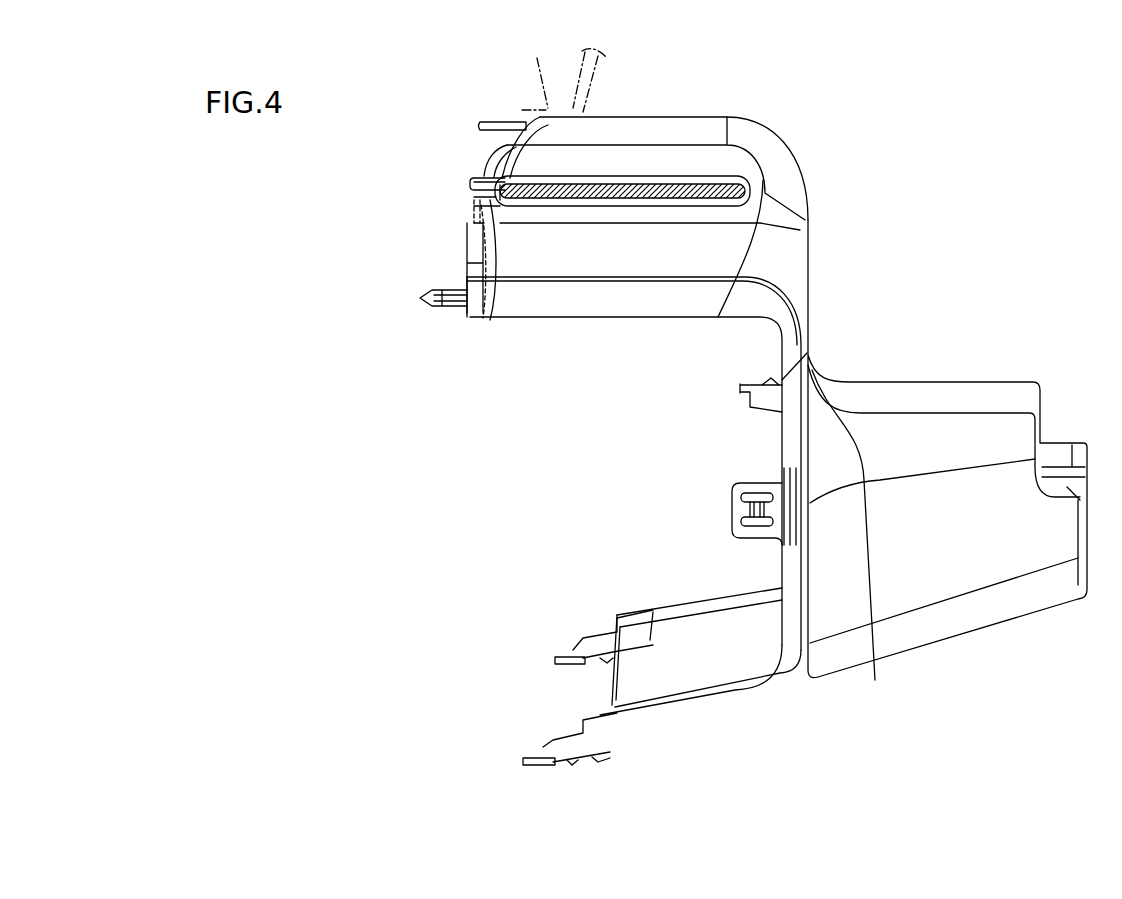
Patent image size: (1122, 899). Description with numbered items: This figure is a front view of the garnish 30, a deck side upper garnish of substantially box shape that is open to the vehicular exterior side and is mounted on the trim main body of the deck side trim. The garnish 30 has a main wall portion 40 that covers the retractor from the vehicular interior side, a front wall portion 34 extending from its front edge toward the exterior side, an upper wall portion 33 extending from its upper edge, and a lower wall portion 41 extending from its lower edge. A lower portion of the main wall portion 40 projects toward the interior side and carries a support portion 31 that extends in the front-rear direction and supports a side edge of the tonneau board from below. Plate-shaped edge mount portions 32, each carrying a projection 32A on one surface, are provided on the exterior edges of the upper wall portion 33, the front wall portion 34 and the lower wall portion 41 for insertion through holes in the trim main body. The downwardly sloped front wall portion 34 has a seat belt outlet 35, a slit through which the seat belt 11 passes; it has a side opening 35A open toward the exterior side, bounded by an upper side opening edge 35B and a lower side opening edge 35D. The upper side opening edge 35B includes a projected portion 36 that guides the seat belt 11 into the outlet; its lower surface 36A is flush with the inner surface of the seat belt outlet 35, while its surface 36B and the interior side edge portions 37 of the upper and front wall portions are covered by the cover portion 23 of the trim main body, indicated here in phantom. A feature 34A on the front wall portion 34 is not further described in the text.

The seat belt 11 is at (613, 183).
The cover portion 23 is at (564, 71).
The garnish 30 is at (810, 131).
The support portion 31 is at (1065, 457).
The edge mount portions 32 is at (447, 307).
The projection 32A is at (750, 511).
The upper wall portion 33 is at (725, 117).
The front wall portion 34 is at (665, 212).
The rib 34A is at (474, 210).
The seat belt outlet 35 is at (663, 183).
The side opening 35A is at (490, 204).
The upper side opening edge 35B is at (503, 150).
The lower side opening edge 35D is at (495, 250).
The projected portion 36 is at (473, 180).
The lower surface 36A is at (492, 194).
The surface 36B is at (484, 172).
The vehicular interior side edge portions 37 is at (473, 255).
The main wall portion 40 is at (810, 267).
The lower wall portion 41 is at (725, 643).